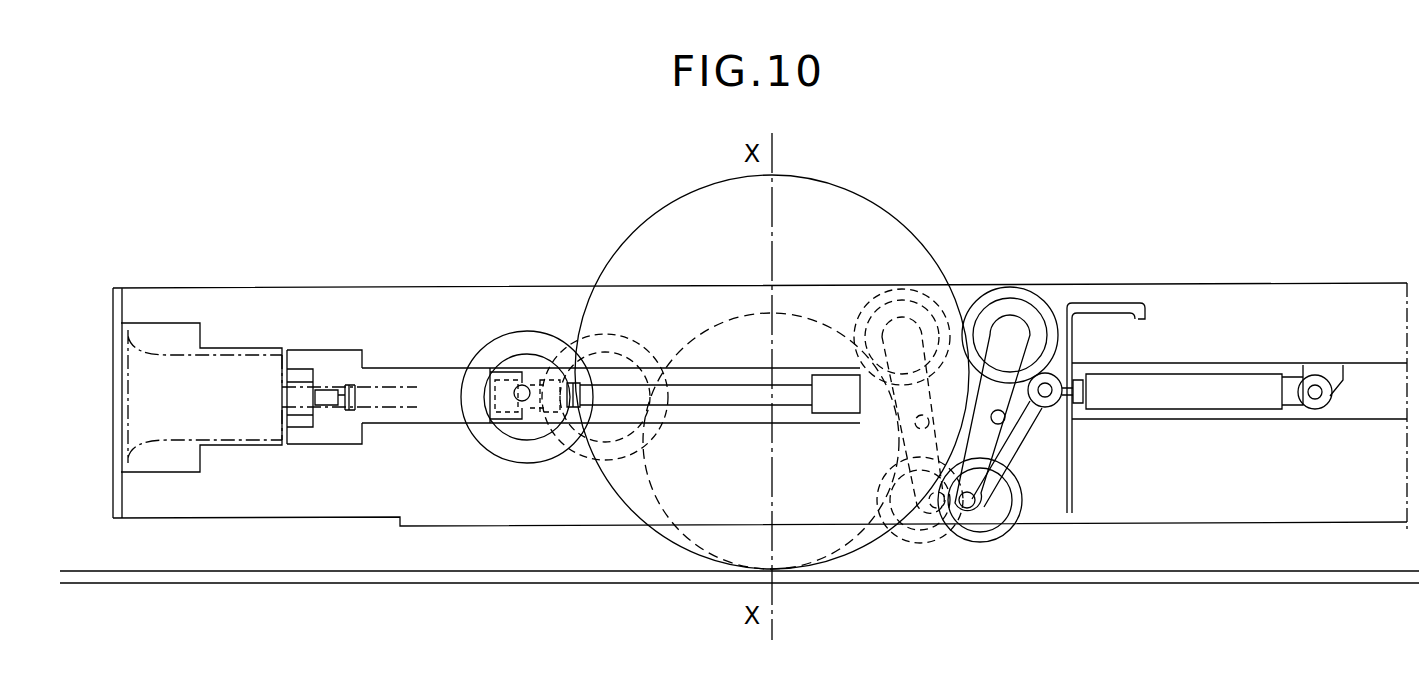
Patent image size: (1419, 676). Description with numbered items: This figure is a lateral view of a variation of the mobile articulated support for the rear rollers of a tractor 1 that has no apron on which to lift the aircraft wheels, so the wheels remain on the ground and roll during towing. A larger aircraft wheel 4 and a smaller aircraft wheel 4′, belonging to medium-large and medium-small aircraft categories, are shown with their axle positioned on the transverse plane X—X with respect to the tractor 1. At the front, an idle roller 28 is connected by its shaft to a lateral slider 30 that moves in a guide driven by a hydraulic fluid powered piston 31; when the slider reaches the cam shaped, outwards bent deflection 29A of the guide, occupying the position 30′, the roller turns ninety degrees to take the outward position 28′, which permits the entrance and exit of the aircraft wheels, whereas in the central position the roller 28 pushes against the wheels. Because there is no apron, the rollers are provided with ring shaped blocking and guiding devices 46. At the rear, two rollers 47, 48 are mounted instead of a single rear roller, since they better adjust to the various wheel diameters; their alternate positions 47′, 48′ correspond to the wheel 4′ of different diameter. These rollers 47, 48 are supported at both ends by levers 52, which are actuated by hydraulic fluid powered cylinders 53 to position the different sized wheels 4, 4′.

The tractor 1 is at (1172, 296).
The front steering wheels 4 is at (657, 208).
The aircraft wheel of different diameter 4′ is at (660, 505).
The idle rollers 28 is at (497, 352).
The outward position of rollers 28′ is at (183, 367).
The cam shaped deflection 29A is at (300, 372).
The lateral sliders 30 is at (528, 388).
The slider in cam section 30′ is at (325, 393).
The hydraulic fluid powered pistons 31 is at (835, 405).
The ring shaped blocking and guiding devices 46 is at (140, 340).
The rear roller 47 is at (1018, 305).
The rear roller in alternate position 47′ is at (917, 305).
The rear roller 48 is at (985, 530).
The rear roller in alternate position 48′ is at (925, 535).
The levers 52 is at (992, 387).
The hydraulic fluid powered cylinders 53 is at (1222, 385).